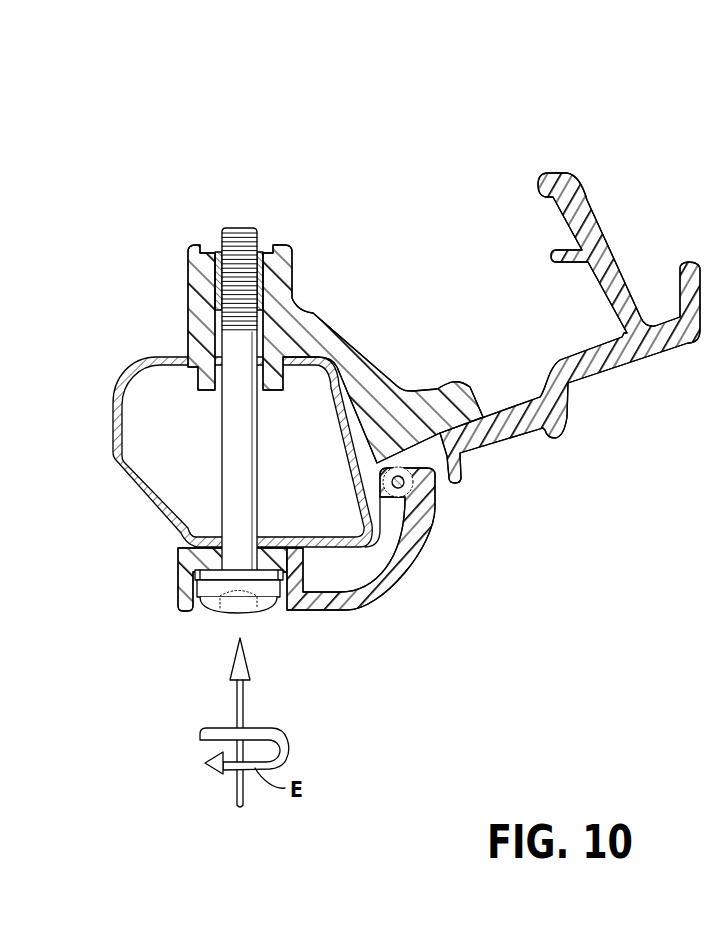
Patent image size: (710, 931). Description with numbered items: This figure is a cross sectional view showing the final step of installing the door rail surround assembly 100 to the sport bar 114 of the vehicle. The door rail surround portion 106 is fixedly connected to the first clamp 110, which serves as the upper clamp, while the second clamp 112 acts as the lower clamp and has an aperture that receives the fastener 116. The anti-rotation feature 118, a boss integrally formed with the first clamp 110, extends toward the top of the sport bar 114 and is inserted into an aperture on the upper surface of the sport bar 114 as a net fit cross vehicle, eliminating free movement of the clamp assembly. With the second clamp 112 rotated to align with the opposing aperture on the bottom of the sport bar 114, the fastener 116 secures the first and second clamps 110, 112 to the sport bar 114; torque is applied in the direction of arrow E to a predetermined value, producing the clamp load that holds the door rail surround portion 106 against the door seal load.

The door rail surround assembly 100 is at (456, 157).
The door rail surround portion 106 is at (525, 481).
The first clamp half 110 is at (367, 353).
The second clamp half 112 is at (355, 603).
The sport bar 114 is at (147, 493).
The fastener 116 is at (268, 607).
The anti-rotation feature 118 is at (197, 382).